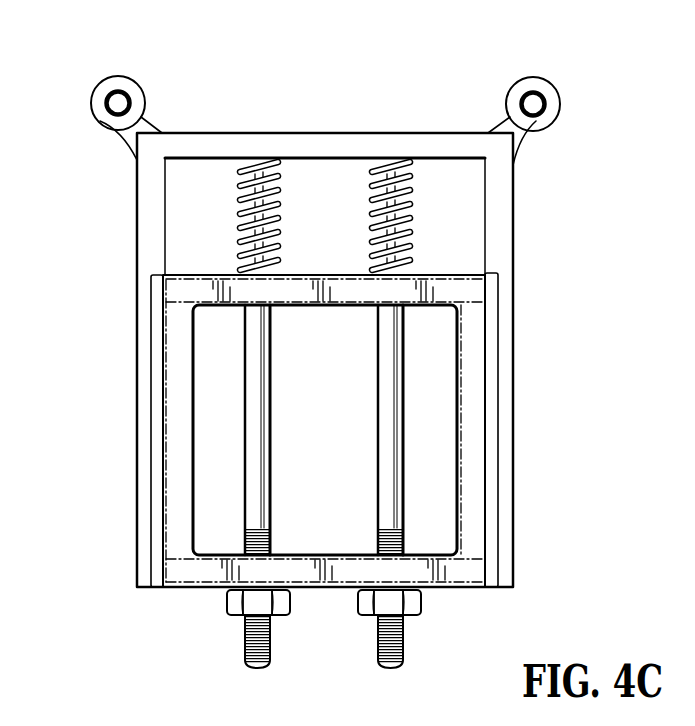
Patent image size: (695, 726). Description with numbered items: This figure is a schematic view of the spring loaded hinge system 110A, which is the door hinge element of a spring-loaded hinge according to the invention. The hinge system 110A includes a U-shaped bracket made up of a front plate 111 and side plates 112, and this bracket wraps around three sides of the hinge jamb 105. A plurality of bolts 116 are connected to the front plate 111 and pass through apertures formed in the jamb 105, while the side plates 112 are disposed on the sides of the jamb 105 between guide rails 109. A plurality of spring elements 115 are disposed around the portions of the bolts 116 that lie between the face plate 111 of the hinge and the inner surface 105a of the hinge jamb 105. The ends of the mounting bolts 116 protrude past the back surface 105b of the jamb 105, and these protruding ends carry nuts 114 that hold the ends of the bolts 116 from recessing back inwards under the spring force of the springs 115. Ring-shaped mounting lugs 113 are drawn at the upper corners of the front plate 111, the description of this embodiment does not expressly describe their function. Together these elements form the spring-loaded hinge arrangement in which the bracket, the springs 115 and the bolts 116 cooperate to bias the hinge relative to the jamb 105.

The spring loaded hinge system 110A is at (112, 349).
The front plate 111 is at (318, 132).
The side plates 112 is at (136, 191).
The mounting rings 113 is at (109, 76).
The spring elements 115 is at (239, 190).
The guide rails 109 is at (156, 272).
The hinge jamb 105 is at (177, 412).
The inner surface 105a is at (313, 274).
The back surface 105b is at (313, 590).
The bolts 116 is at (259, 383).
The nuts 114 is at (229, 603).